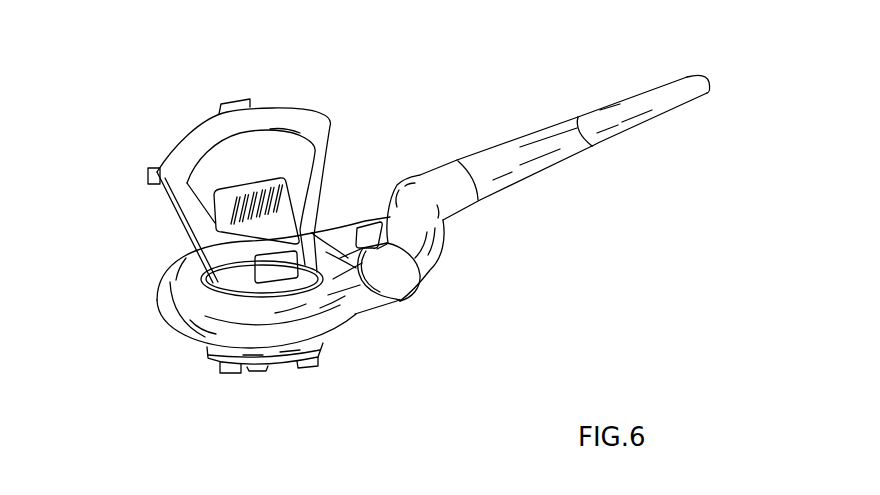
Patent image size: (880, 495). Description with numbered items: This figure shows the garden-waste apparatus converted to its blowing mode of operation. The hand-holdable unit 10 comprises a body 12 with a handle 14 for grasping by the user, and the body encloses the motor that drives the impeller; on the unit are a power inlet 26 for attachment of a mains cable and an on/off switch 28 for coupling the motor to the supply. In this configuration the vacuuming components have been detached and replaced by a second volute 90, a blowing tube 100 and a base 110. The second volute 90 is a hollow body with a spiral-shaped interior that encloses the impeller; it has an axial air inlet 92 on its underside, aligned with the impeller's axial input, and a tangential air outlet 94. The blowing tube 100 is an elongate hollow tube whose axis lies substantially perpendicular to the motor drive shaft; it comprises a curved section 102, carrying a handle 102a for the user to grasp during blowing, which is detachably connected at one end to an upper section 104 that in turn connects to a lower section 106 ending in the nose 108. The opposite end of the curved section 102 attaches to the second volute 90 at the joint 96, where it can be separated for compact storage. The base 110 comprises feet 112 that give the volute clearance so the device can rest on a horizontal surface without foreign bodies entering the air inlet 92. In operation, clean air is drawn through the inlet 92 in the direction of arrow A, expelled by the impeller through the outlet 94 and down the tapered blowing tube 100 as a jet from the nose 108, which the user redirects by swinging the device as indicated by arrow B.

The hand-holdable unit 10 is at (170, 247).
The body 12 is at (231, 279).
The handle 14 is at (290, 119).
The power inlet 26 is at (148, 175).
The on/off switch 28 is at (230, 106).
The second volute 90 is at (179, 348).
The axial air inlet 92 is at (268, 368).
The tangential air outlet 94 is at (356, 298).
The joint 96 is at (398, 293).
The blowing tube 100 is at (597, 176).
The curved section 102 is at (423, 255).
The handle 102a is at (367, 222).
The upper section 104 is at (514, 166).
The lower section 106 is at (628, 110).
The nose 108 is at (708, 86).
The base 110 is at (253, 358).
The feet 112 is at (230, 375).